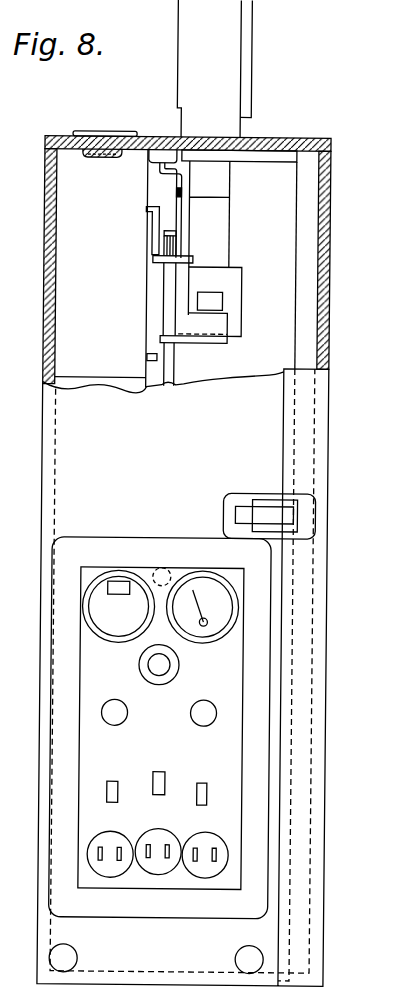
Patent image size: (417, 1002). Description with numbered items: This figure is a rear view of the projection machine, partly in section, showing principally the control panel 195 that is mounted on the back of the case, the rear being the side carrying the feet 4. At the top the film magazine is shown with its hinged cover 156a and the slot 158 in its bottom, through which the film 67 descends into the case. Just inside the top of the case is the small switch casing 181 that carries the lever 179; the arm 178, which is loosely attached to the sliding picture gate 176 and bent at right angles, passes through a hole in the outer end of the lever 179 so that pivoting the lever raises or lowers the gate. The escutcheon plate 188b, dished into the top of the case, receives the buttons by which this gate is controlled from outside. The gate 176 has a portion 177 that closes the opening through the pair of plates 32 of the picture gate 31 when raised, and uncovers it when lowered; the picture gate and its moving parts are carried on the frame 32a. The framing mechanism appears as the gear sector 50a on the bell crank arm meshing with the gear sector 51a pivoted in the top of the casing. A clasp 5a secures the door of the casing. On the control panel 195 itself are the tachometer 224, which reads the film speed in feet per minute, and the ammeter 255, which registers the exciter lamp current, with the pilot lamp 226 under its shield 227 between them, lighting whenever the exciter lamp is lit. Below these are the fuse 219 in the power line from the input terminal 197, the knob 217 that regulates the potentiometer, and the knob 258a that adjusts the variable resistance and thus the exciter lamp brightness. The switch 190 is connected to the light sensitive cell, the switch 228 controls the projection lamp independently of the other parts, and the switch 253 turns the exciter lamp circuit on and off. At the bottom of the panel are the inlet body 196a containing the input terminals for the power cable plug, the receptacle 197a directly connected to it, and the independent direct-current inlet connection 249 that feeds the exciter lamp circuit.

The slot 158 is at (173, 14).
The cover 156a is at (243, 25).
The escutcheon plate 188b is at (68, 132).
The small casing 181 is at (66, 191).
The gear sector 51a is at (174, 181).
The gear sector 50a is at (178, 202).
The lever 179 is at (143, 209).
The arm 178 is at (161, 247).
The film 67 is at (222, 190).
The picture gate 31 is at (226, 267).
The plates 32 is at (230, 292).
The portion 177 is at (211, 327).
The picture gate 176 is at (184, 296).
The frame 32a is at (169, 381).
The clasp 5a is at (315, 516).
The control panel 195 is at (85, 748).
The input terminal 197 is at (160, 755).
The tachometer 224 is at (100, 586).
The shield 227 is at (153, 572).
The pilot lamp 226 is at (165, 572).
The ammeter 255 is at (203, 580).
The fuse 219 is at (168, 667).
The knob 217 is at (120, 687).
The knob 258a is at (215, 694).
The switch 190 is at (109, 792).
The switch 228 is at (175, 757).
The switch 253 is at (215, 766).
The inlet body 196a is at (113, 878).
The receptacle 197a is at (165, 876).
The inlet connection 249 is at (215, 878).
The feet 4 is at (66, 958).